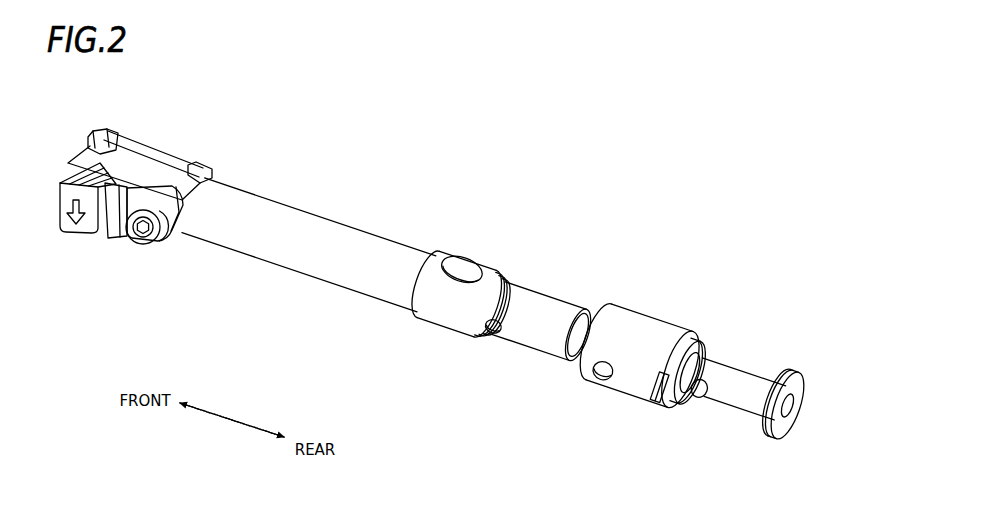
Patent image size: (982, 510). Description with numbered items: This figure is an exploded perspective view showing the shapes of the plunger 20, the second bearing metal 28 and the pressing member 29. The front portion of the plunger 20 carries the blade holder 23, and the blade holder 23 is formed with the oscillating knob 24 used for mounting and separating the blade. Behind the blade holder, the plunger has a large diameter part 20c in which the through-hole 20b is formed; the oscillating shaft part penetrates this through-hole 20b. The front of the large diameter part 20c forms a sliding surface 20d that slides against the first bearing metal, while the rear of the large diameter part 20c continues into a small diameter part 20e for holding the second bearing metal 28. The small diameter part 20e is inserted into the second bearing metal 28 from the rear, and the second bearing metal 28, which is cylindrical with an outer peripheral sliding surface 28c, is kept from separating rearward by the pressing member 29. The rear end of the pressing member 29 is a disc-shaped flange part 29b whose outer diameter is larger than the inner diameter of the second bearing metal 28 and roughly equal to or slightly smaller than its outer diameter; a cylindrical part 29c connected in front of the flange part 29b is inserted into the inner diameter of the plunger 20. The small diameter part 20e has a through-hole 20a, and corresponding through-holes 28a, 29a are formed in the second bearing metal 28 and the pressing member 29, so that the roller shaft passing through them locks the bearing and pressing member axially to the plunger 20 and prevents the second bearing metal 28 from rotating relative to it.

The plunger 20 is at (276, 201).
The through-hole 20a is at (490, 333).
The through-hole 20b is at (467, 256).
The large diameter part 20c is at (443, 321).
The sliding surface 20d is at (345, 240).
The small diameter part 20e is at (535, 301).
The blade holder 23 is at (133, 153).
The oscillating knob 24 is at (85, 229).
The second bearing metal 28 is at (646, 318).
The through-hole 28a is at (603, 380).
The sliding surface 28c is at (628, 380).
The pressing member 29 is at (743, 370).
The through-hole 29a is at (694, 392).
The flange part 29b is at (782, 433).
The cylindrical part 29c is at (740, 405).